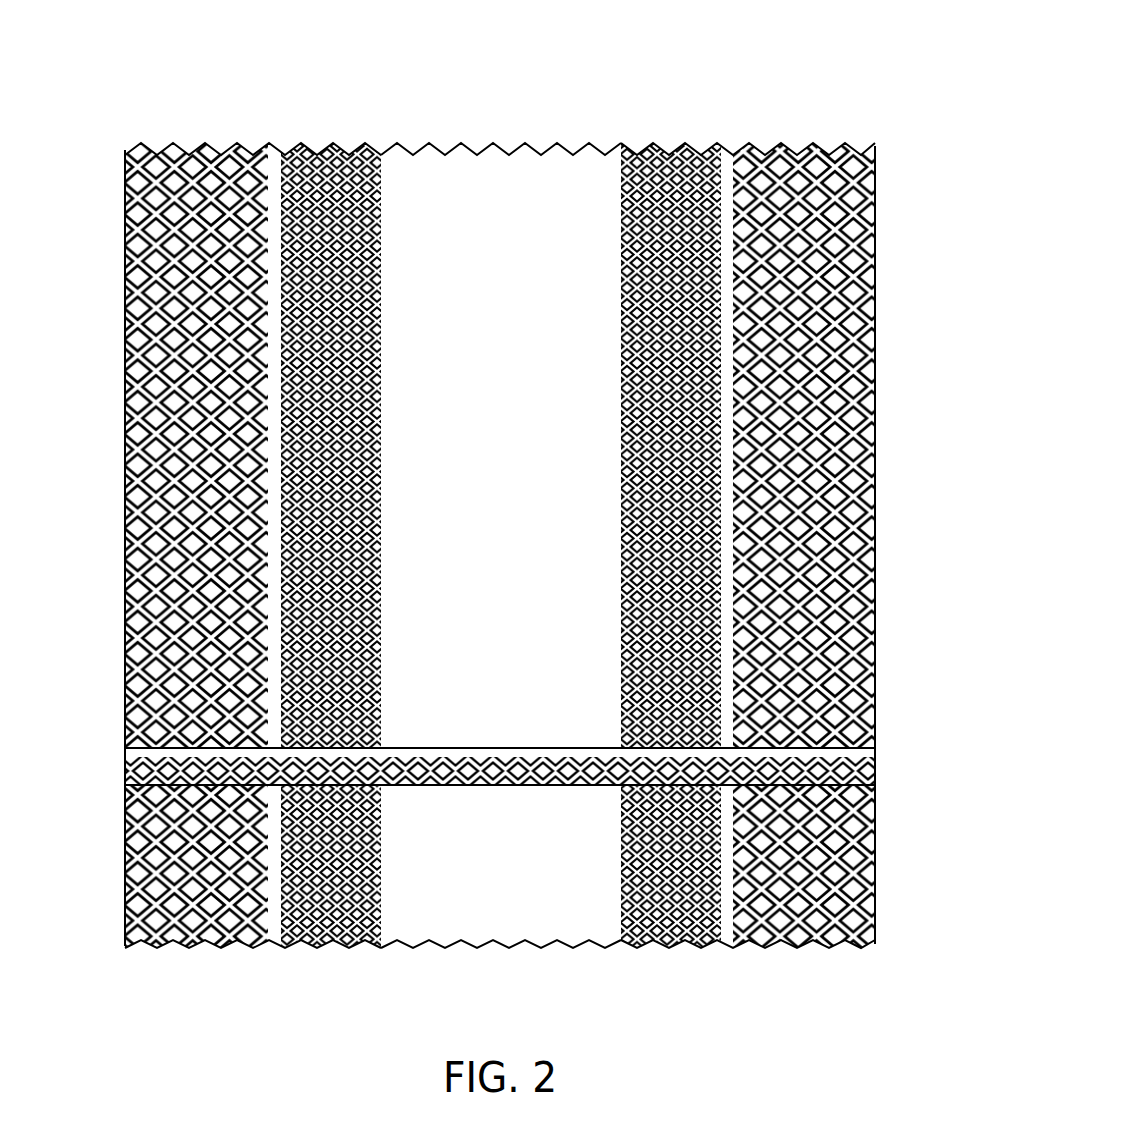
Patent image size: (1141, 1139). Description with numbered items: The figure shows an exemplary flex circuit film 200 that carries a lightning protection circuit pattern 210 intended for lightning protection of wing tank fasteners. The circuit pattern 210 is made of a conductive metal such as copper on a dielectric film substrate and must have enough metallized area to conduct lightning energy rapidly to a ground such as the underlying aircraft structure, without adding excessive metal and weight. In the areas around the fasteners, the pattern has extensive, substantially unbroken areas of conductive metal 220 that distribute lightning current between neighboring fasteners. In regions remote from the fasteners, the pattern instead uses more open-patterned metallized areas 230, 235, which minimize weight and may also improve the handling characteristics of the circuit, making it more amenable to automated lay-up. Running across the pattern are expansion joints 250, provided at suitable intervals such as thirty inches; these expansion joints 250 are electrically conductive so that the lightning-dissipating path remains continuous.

The flex circuit film 200 is at (731, 96).
The lightning protection circuit pattern 210 is at (446, 162).
The substantially unbroken areas of conductive metal 220 is at (518, 232).
The open-patterned metallized area 230 is at (132, 426).
The open-patterned metallized area 235 is at (330, 513).
The expansion joint 250 is at (872, 756).